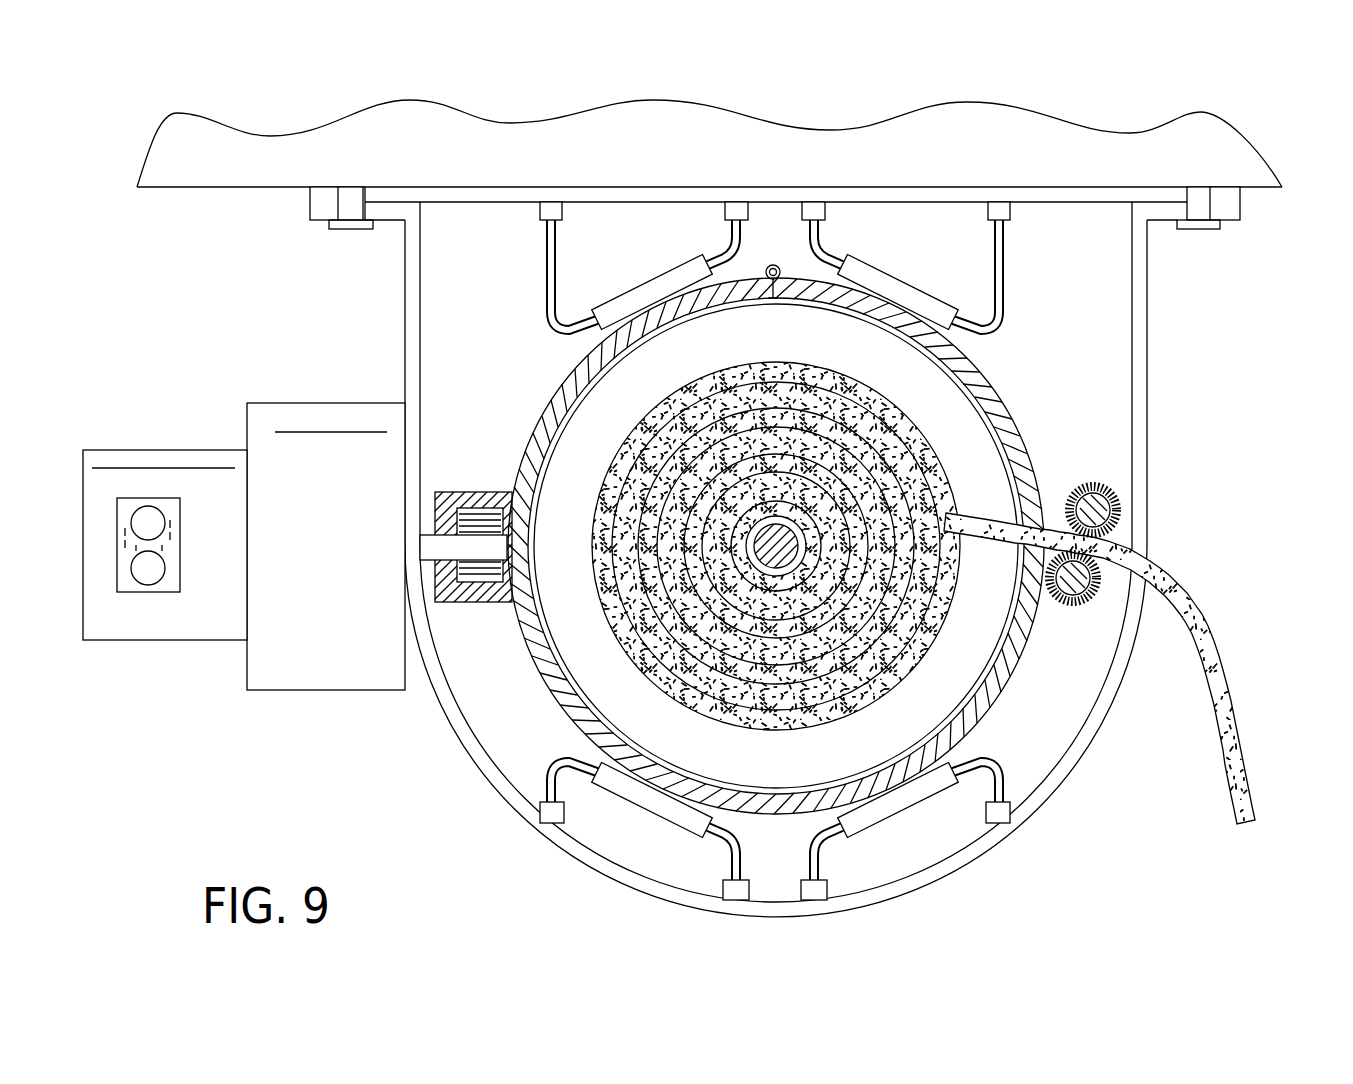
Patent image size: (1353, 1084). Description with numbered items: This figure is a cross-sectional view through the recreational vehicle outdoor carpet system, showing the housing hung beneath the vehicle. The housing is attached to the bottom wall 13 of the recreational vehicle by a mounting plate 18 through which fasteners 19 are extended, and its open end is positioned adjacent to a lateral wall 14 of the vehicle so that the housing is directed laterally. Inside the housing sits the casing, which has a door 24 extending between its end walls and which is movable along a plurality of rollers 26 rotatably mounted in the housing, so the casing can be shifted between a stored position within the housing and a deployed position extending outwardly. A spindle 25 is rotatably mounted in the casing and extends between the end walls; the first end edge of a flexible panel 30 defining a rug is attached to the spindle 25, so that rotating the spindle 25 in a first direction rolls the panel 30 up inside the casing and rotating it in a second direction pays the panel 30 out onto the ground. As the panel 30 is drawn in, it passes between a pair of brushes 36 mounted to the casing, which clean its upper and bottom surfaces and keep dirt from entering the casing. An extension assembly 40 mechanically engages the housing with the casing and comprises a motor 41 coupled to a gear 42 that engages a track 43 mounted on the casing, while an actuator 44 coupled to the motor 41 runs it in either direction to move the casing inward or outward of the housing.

The bottom wall 13 is at (246, 188).
The lateral wall 14 is at (214, 176).
The mounting plate 18 is at (1240, 196).
The fasteners 19 is at (1197, 229).
The door 24 is at (1012, 392).
The spindle 25 is at (782, 549).
The rollers 26 is at (877, 268).
The flexible panel 30 is at (1212, 628).
The brushes 36 is at (1118, 520).
The extension assembly 40 is at (177, 648).
The motor 41 is at (140, 450).
The gear 42 is at (437, 575).
The track 43 is at (480, 592).
The actuator 44 is at (126, 586).